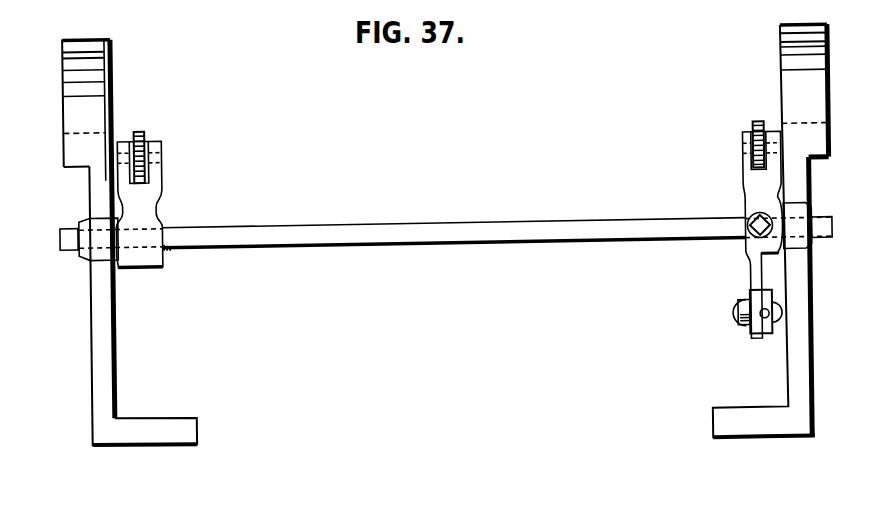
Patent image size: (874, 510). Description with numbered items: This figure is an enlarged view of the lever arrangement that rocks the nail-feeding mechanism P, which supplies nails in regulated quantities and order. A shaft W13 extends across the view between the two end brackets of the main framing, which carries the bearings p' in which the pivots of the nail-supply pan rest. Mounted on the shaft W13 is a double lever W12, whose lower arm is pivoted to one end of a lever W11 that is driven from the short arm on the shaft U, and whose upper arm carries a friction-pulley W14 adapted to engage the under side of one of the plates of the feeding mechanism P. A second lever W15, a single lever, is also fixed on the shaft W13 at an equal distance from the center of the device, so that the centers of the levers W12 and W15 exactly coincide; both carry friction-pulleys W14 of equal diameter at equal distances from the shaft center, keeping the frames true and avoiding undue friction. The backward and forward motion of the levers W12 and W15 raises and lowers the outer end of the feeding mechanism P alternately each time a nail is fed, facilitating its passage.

The bearings p' is at (456, 103).
The nail-feeding mechanism P is at (112, 312).
The lever W11 is at (777, 361).
The double lever W12 is at (735, 235).
The shaft W13 is at (446, 226).
The friction-pulley W14 is at (138, 126).
The second lever W15 is at (162, 204).